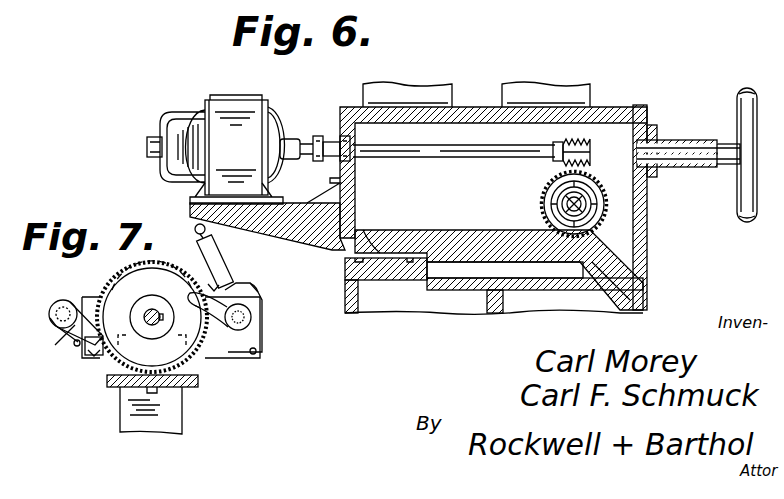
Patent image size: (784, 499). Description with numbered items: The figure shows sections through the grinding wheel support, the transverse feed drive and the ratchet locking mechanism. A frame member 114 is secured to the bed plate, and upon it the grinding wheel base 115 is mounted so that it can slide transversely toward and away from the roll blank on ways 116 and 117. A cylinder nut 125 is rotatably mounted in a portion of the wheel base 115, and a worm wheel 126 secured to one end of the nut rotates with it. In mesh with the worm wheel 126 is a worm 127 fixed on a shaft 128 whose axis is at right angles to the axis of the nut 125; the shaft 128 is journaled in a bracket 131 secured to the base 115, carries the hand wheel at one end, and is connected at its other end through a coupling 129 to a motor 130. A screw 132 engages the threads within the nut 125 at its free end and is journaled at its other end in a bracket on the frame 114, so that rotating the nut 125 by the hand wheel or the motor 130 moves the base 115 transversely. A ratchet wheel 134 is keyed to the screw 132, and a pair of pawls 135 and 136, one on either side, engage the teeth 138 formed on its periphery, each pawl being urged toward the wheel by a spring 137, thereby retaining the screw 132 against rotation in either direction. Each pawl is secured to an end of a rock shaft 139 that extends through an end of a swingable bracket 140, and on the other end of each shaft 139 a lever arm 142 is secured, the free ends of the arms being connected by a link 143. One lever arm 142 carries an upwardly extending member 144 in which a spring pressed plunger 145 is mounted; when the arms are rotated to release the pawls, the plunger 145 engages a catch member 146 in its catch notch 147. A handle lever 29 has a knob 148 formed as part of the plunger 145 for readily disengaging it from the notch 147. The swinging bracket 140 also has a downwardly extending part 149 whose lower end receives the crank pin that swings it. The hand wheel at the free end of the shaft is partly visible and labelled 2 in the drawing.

In FIG. 6, the hand wheel 2 is at (756, 126).
In FIG. 7, the handle lever 29 is at (202, 238).
In FIG. 6, the frame member 114 is at (650, 287).
In FIG. 6, the grinding wheel base 115 is at (648, 210).
In FIG. 6, the way 116 is at (390, 255).
In FIG. 6, the way 117 is at (606, 266).
In FIG. 6, the cylinder nut 125 is at (563, 203).
In FIG. 6, the worm wheel 126 is at (552, 196).
In FIG. 6, the worm 127 is at (562, 140).
In FIG. 6, the shaft 128 is at (457, 153).
In FIG. 6, the coupling 129 is at (336, 140).
In FIG. 6, the motor 130 is at (231, 125).
In FIG. 6, the bracket 131 is at (683, 140).
In FIG. 6, the screw 132 is at (590, 200).
In FIG. 7, the screw 132 is at (151, 309).
In FIG. 7, the ratchet wheel 134 is at (170, 280).
In FIG. 7, the pawl 135 is at (78, 305).
In FIG. 7, the pawl 136 is at (234, 300).
In FIG. 7, the spring 137 is at (88, 353).
In FIG. 7, the teeth 138 is at (118, 272).
In FIG. 7, the rock shaft 139 is at (50, 320).
In FIG. 7, the swingable bracket 140 is at (222, 342).
In FIG. 7, the lever arm 142 is at (68, 340).
In FIG. 7, the link 143 is at (98, 356).
In FIG. 7, the upwardly extending member 144 is at (221, 252).
In FIG. 7, the spring pressed plunger 145 is at (240, 272).
In FIG. 7, the catch member 146 is at (263, 300).
In FIG. 7, the catch notch 147 is at (260, 292).
In FIG. 7, the knob 148 is at (195, 228).
In FIG. 7, the downwardly extending part 149 is at (128, 426).